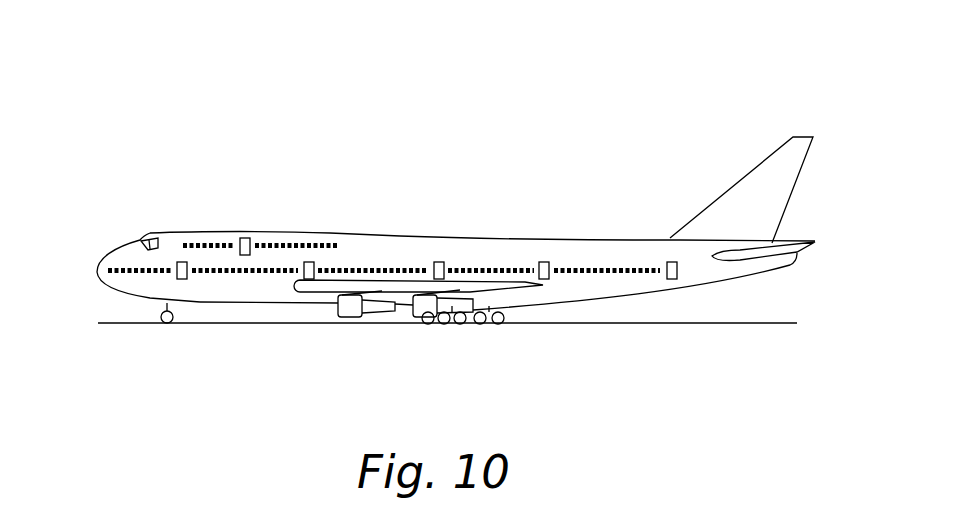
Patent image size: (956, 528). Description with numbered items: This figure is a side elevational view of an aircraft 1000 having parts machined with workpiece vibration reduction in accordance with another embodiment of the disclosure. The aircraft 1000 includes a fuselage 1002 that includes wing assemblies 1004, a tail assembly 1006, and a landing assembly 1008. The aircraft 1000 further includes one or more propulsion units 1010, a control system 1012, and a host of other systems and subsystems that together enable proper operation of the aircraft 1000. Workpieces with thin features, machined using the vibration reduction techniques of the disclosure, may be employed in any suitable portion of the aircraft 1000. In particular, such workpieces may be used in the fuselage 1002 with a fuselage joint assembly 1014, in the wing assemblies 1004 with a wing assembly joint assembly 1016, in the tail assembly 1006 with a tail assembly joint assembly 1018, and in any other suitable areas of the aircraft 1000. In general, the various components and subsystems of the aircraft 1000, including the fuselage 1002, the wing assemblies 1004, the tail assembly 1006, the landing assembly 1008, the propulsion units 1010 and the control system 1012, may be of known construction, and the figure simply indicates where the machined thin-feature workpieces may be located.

The aircraft 1000 is at (188, 97).
The fuselage 1002 is at (568, 298).
The wing assemblies 1004 is at (317, 288).
The tail assembly 1006 is at (735, 165).
The landing assembly 1008 is at (455, 332).
The propulsion units 1010 is at (345, 318).
The control system 1012 is at (98, 291).
The fuselage joint assembly 1014 is at (345, 219).
The wing assembly joint assembly 1016 is at (390, 266).
The tail assembly joint assembly 1018 is at (678, 213).